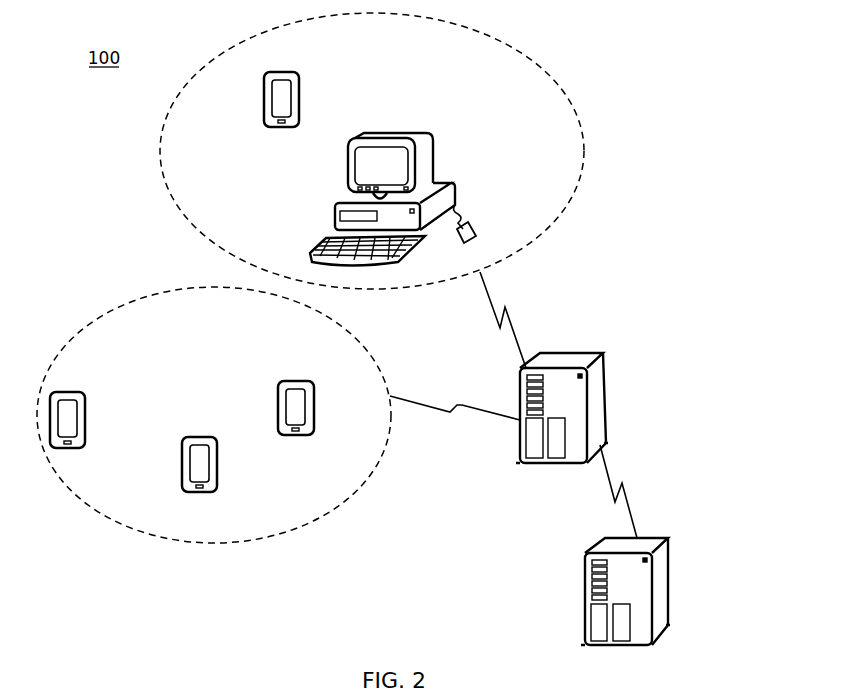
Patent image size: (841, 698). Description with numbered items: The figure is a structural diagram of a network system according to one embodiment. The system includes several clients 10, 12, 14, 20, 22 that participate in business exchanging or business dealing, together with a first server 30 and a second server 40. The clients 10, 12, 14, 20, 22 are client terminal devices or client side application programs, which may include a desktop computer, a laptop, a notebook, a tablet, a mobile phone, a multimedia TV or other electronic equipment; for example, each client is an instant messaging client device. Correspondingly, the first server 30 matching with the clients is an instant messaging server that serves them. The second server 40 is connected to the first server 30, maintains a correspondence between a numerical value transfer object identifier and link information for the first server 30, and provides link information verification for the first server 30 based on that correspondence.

The client 10 is at (73, 392).
The client 12 is at (203, 438).
The client 14 is at (293, 381).
The client 20 is at (288, 73).
The client 22 is at (455, 185).
The first server 30 is at (606, 356).
The second server 40 is at (665, 537).